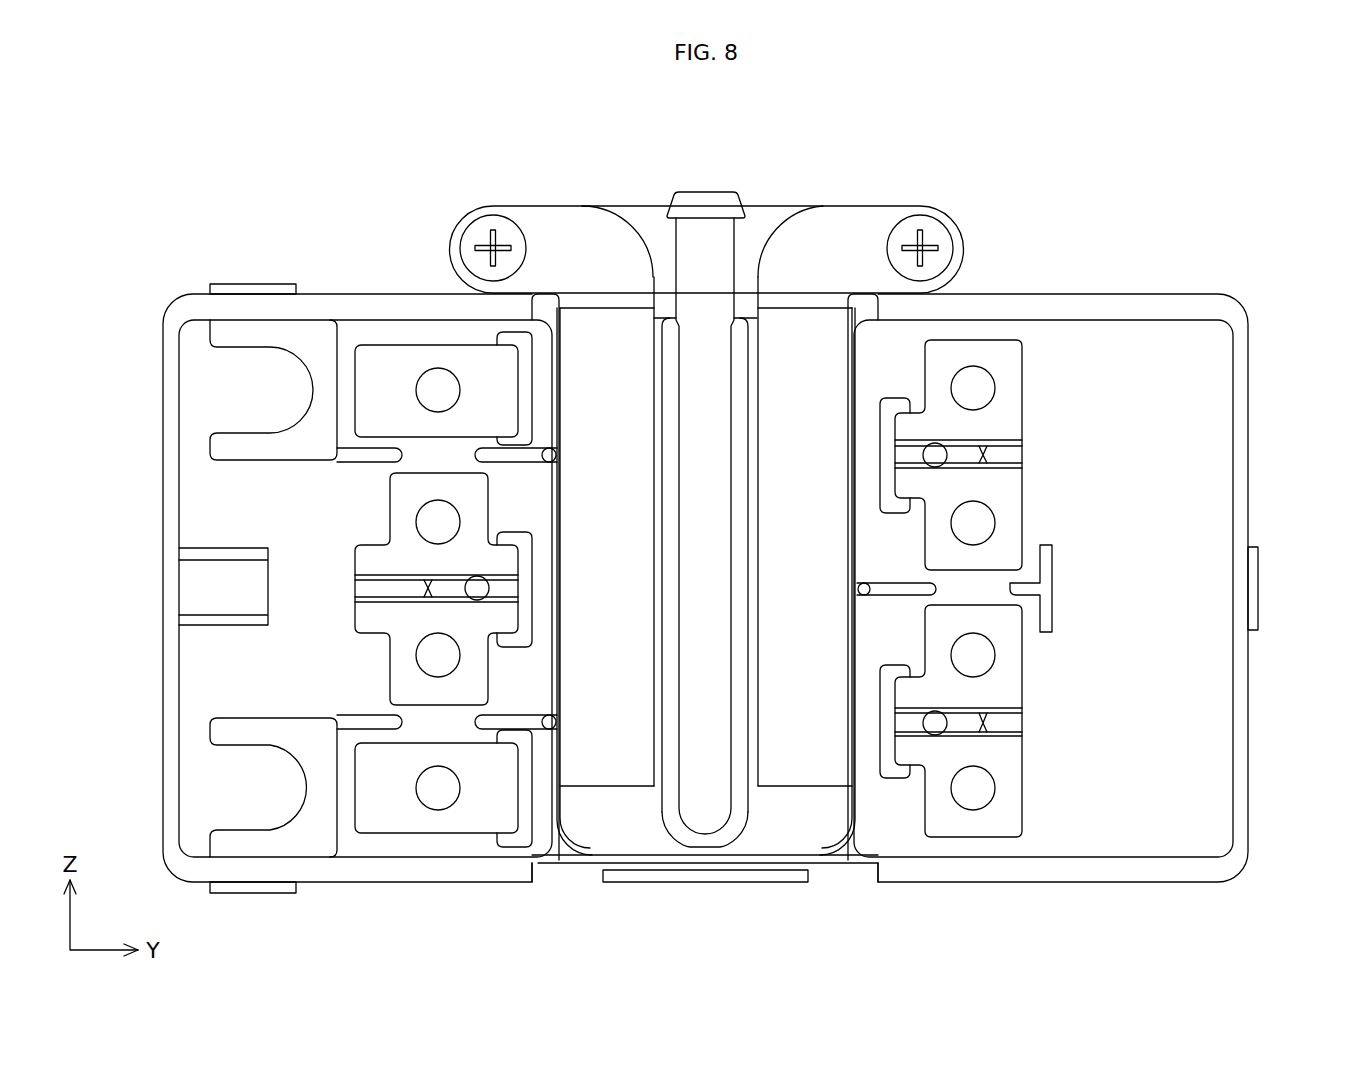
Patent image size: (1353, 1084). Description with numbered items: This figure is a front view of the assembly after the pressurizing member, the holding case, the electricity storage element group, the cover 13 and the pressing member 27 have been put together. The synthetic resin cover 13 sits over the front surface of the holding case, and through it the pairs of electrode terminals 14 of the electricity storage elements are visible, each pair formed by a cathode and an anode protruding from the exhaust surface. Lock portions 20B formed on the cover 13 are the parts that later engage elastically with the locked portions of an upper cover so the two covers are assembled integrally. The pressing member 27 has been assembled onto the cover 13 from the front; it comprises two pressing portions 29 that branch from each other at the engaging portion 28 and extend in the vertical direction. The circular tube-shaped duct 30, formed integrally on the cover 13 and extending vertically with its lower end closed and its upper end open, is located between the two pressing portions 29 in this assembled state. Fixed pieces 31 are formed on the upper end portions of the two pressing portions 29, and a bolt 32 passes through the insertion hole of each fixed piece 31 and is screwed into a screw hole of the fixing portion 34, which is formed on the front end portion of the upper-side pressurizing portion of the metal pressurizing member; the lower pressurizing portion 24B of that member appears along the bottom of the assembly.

The cover 13 is at (1172, 345).
The electrode terminals 14 is at (437, 540).
The lock portions 20B is at (252, 290).
The pressurizing portion 24B is at (845, 863).
The pressing member 27 is at (628, 812).
The engaging portion 28 is at (710, 876).
The pressing portions 29 is at (603, 728).
The duct 30 is at (725, 245).
The fixed pieces 31 is at (570, 243).
The bolt 32 is at (481, 232).
The fixing portion 34 is at (768, 228).